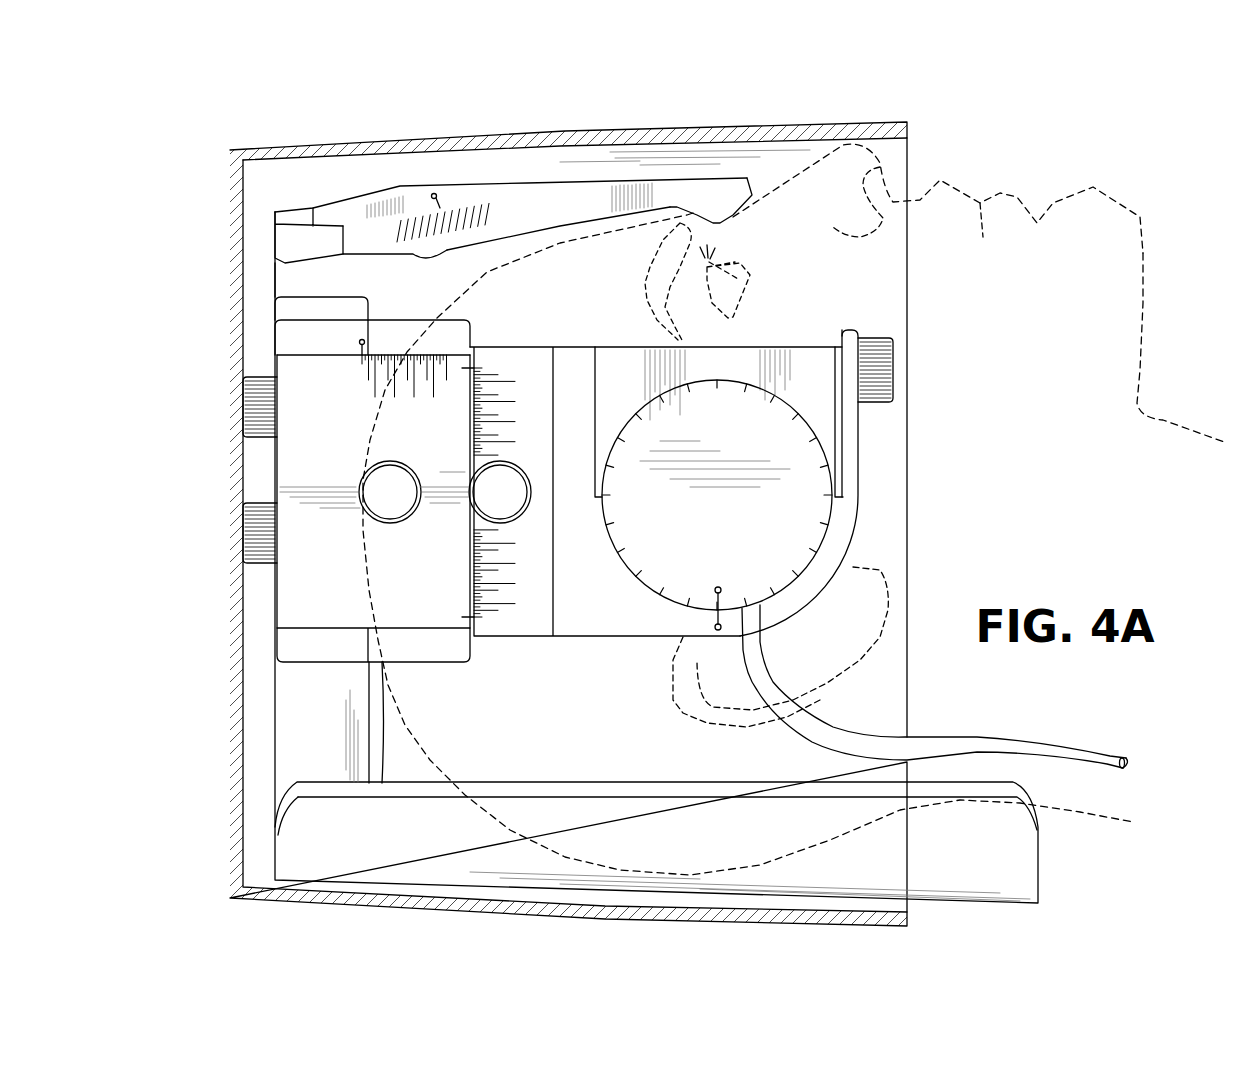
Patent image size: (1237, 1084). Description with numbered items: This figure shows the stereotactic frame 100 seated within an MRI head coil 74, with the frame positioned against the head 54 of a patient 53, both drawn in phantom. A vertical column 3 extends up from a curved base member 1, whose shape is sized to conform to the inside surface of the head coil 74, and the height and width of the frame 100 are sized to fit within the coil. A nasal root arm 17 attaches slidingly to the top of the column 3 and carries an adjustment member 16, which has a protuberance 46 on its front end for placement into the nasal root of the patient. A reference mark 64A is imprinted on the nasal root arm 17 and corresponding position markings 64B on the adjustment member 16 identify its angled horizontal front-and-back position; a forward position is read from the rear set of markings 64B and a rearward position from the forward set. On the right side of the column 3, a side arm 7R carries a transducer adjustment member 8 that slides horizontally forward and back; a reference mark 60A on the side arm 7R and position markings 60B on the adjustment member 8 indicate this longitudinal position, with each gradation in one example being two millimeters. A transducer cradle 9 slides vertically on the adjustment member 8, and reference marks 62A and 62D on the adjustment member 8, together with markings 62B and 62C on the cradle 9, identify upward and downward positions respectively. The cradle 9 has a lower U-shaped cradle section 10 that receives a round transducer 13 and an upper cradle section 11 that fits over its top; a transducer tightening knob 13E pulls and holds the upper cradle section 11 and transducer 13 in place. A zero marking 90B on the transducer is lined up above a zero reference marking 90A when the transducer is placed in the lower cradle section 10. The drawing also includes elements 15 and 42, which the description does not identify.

The base member 1 is at (1045, 888).
The vertical column 3 is at (275, 712).
The right side arm 7R is at (470, 320).
The transducer adjustment member 8 is at (403, 630).
The transducer cradle 9 is at (803, 333).
The lower cradle section 10 is at (808, 607).
The upper cradle section 11 is at (625, 347).
The transducer 13 is at (640, 588).
The transducer tightening knob 13E is at (895, 368).
The tube 15 is at (1003, 752).
The adjustment member 16 is at (578, 221).
The nasal root arm 17 is at (325, 176).
The support post 42 is at (275, 268).
The protuberance 46 is at (735, 225).
The patient 53 is at (1138, 167).
The head 54 is at (1145, 255).
The reference mark 60A is at (358, 344).
The position markings 60B is at (368, 394).
The reference mark 62A is at (466, 372).
The position markings 62B is at (513, 380).
The position markings 62C is at (518, 620).
The reference mark 62D is at (466, 614).
The reference mark 64A is at (440, 200).
The position markings 64B is at (393, 232).
The MRI head coil 74 is at (570, 132).
The zero reference marking 90A is at (714, 619).
The zero marking 90B is at (636, 546).
The stereotactic frame 100 is at (950, 140).